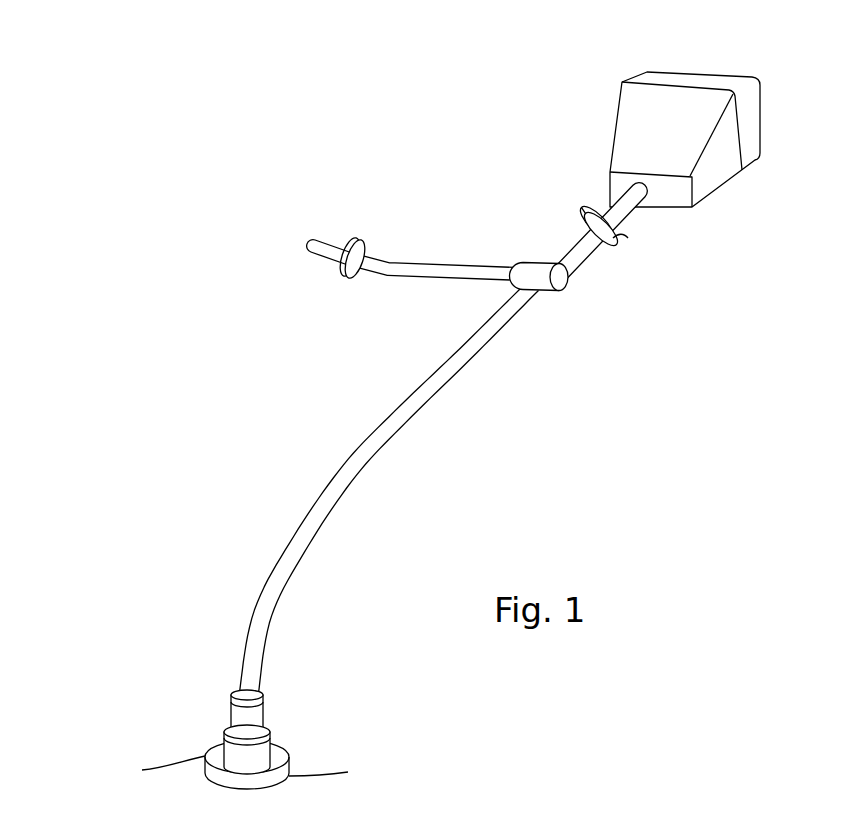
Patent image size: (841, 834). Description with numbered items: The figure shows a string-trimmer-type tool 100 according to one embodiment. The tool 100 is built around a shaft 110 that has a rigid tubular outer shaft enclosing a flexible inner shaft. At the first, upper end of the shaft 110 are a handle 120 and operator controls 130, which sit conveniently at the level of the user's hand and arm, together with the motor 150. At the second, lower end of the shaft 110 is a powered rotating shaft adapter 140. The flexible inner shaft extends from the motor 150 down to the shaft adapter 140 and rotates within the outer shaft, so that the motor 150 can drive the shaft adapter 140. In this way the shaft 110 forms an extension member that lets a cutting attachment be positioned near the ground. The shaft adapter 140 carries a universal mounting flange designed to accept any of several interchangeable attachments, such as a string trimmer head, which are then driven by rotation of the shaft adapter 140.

The tool 100 is at (206, 347).
The shaft 110 is at (343, 467).
The handle 120 is at (326, 238).
The operator controls 130 is at (624, 240).
The shaft adapter 140 is at (279, 740).
The motor 150 is at (694, 72).